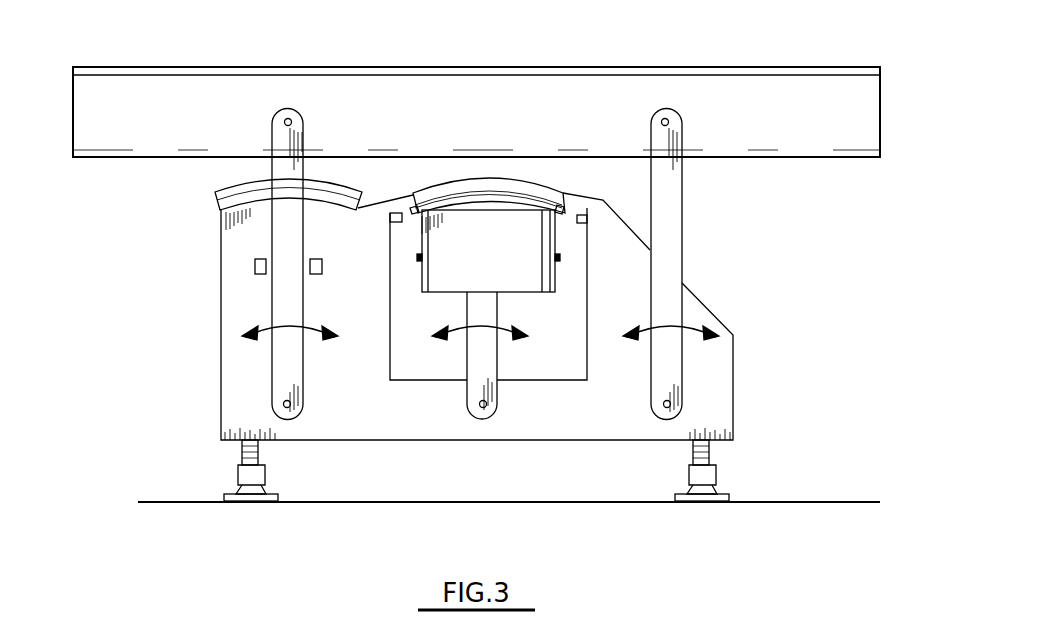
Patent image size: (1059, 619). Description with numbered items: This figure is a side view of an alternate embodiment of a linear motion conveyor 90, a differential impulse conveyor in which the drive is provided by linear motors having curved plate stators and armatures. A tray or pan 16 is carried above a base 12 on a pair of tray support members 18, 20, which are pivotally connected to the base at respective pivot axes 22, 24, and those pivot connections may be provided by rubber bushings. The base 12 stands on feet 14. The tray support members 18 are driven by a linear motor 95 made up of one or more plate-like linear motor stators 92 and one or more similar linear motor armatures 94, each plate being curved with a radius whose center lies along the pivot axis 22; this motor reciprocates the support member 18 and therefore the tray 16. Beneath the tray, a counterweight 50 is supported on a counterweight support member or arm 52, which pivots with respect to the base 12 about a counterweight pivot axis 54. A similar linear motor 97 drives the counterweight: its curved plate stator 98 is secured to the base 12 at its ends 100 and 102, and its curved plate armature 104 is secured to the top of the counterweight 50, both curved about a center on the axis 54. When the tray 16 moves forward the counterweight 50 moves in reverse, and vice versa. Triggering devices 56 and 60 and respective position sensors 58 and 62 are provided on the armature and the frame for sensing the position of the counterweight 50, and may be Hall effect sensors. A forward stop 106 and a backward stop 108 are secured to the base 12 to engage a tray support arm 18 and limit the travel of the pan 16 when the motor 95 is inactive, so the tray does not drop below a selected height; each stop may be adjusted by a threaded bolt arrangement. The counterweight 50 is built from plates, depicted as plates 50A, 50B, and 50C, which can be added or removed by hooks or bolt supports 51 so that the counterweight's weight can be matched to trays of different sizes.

The base 12 is at (364, 429).
The adjustable feet 14 is at (238, 478).
The tray 16 is at (783, 131).
The tray support member 18 is at (288, 385).
The tray support member 20 is at (670, 228).
The pivot axis 22 is at (283, 403).
The pivot axis 24 is at (288, 118).
The counterweight 50 is at (468, 276).
The plate 50A is at (425, 294).
The plate 50B is at (543, 294).
The plate 50C is at (489, 314).
The bolt supports 51 is at (418, 262).
The counterweight support member 52 is at (492, 392).
The counterweight pivot axis 54 is at (487, 404).
The triggering device 56 is at (414, 212).
The position sensor 58 is at (397, 224).
The triggering device 60 is at (563, 210).
The position sensor 62 is at (587, 219).
The linear motion conveyor 90 is at (212, 88).
The linear motor stator 92 is at (230, 203).
The linear motor armature 94 is at (323, 188).
The linear motor 95 is at (214, 168).
The linear motor 97 is at (521, 130).
The stator 98 is at (455, 196).
The end 100 is at (397, 193).
The end 102 is at (576, 192).
The armature 104 is at (510, 200).
The forward stop 106 is at (309, 270).
The backward stop 108 is at (254, 267).